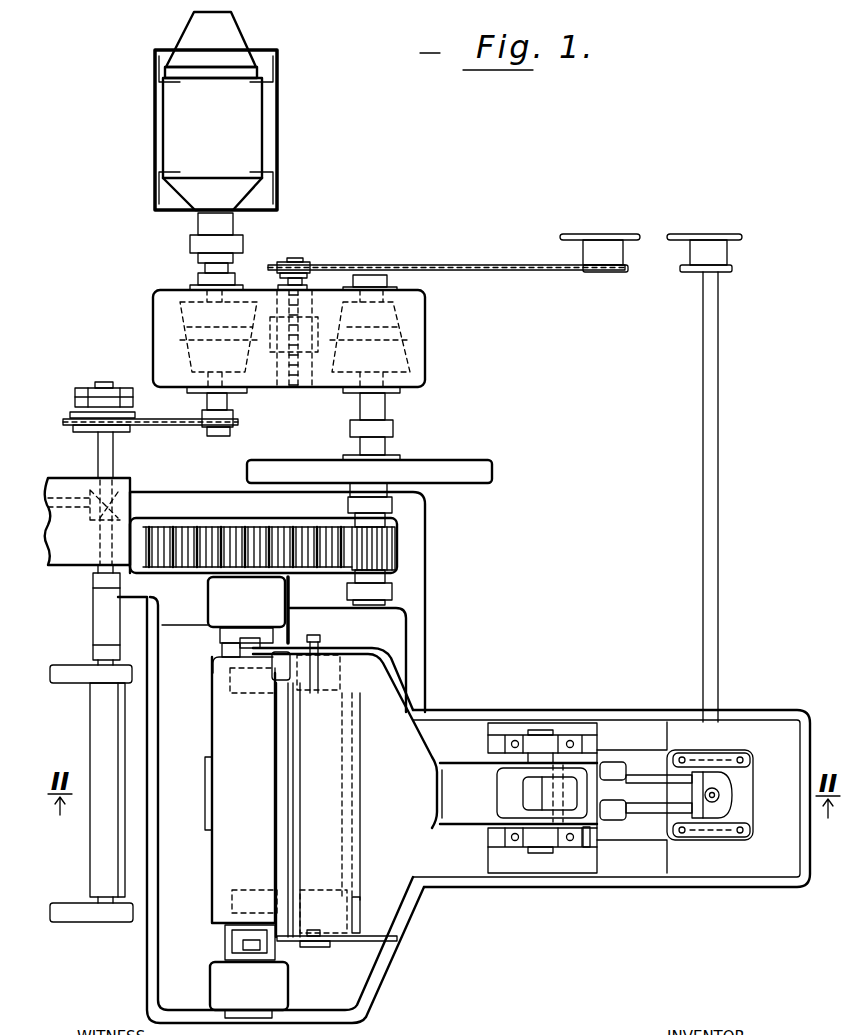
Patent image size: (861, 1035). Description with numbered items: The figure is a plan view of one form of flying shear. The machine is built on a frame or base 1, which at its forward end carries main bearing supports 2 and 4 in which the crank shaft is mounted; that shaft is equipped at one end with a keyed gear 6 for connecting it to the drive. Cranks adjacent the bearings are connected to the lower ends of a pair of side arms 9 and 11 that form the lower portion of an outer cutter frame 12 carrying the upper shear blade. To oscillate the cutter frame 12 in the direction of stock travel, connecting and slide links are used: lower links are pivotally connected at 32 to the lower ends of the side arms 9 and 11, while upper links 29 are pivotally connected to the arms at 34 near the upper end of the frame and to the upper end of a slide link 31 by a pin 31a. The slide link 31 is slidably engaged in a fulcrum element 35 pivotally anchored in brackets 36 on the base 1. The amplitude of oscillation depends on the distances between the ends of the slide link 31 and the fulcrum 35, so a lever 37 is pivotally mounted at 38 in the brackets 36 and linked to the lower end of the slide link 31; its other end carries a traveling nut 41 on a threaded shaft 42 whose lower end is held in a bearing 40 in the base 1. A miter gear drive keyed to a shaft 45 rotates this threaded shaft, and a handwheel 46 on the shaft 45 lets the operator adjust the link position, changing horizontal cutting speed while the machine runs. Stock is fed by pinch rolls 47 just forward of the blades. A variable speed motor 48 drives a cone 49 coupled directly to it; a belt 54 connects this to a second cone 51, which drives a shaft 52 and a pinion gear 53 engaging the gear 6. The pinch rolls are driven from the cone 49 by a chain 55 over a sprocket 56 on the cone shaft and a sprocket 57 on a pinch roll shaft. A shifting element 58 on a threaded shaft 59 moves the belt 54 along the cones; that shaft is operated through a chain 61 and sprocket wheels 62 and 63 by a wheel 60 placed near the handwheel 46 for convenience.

The frame or base 1 is at (178, 985).
The main bearing support 2 is at (250, 611).
The main bearing support 4 is at (236, 996).
The keyed gear 6 is at (241, 545).
The side arm 9 is at (232, 665).
The side arm 11 is at (225, 915).
The outer cutter frame 12 is at (226, 787).
The upper link 29 is at (393, 727).
The slide link 31 is at (523, 793).
The pin 31a is at (587, 847).
The pivot connection 32 is at (320, 646).
The pivot connection 34 is at (273, 643).
The fulcrum element 35 is at (537, 757).
The bracket 36 is at (507, 727).
The lever 37 is at (658, 779).
The pivot 38 is at (627, 817).
The bearing 40 is at (735, 820).
The traveling nut 41 is at (728, 787).
The threaded shaft 42 is at (726, 795).
The shaft 45 is at (717, 604).
The handwheel 46 is at (686, 236).
The pinch rolls 47 is at (90, 731).
The variable speed motor 48 is at (247, 122).
The cone 49 is at (178, 287).
The cone 51 is at (427, 317).
The shaft 52 is at (374, 412).
The pinion gear 53 is at (397, 546).
The belt 54 is at (300, 387).
The chain 55 is at (179, 427).
The sprocket 56 is at (233, 424).
The sprocket 57 is at (82, 432).
The shifting element 58 is at (328, 287).
The threaded shaft 59 is at (310, 275).
The wheel 60 is at (582, 236).
The chain 61 is at (469, 265).
The sprocket wheel 62 is at (610, 272).
The sprocket wheel 63 is at (280, 262).